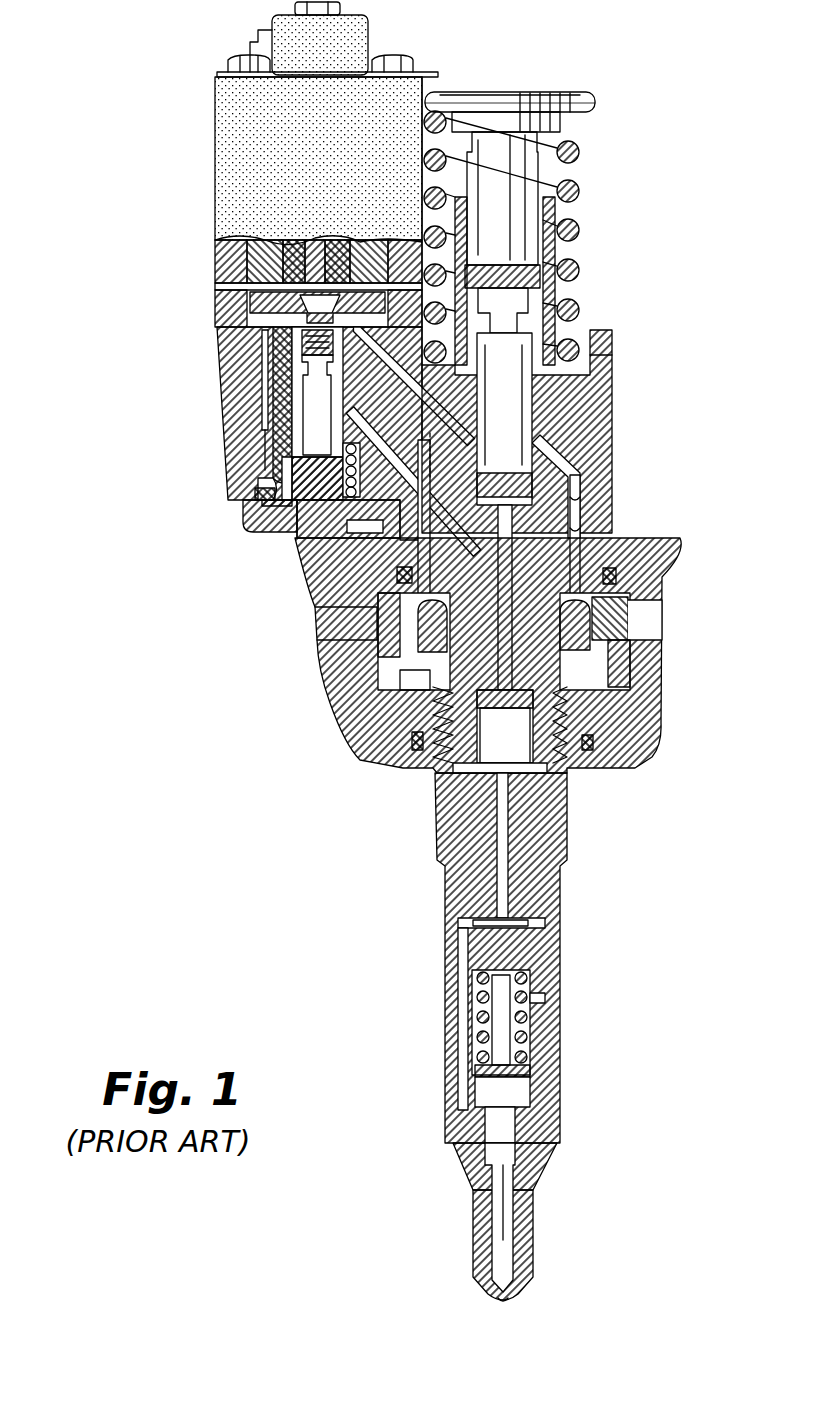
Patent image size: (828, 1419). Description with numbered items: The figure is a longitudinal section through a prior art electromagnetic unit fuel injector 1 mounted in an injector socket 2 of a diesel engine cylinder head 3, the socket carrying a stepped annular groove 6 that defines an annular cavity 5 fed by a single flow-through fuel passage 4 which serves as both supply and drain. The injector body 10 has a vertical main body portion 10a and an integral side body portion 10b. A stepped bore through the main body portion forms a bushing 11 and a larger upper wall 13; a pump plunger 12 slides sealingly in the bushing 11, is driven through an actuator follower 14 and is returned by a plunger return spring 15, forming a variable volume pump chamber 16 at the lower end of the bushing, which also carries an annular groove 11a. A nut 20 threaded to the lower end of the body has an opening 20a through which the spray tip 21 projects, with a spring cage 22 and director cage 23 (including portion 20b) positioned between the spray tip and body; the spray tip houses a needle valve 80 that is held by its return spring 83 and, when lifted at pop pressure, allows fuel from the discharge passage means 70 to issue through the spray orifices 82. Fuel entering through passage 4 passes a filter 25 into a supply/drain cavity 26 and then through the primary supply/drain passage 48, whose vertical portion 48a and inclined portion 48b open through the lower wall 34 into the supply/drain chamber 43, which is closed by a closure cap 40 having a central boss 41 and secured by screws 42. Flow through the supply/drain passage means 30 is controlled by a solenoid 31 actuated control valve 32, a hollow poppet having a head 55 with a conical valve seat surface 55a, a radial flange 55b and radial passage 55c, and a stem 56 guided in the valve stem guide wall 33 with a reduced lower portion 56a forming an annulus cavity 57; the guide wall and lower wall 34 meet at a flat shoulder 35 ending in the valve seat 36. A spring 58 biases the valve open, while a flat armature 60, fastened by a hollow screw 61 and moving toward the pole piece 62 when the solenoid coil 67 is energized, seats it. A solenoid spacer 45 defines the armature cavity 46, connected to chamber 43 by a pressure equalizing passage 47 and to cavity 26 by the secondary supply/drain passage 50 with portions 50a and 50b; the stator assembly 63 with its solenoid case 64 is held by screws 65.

The electromagnetic unit fuel injector 1 is at (628, 312).
The injector socket 2 is at (505, 742).
The cylinder head 3 is at (664, 727).
The fuel passage 4 is at (378, 642).
The annular cavity 5 is at (404, 692).
The stepped annular groove 6 is at (412, 686).
The injector body 10 is at (614, 385).
The main body portion 10a is at (596, 455).
The side body portion 10b is at (258, 420).
The bushing 11 is at (570, 708).
The annular groove 11a is at (522, 430).
The pump plunger 12 is at (536, 396).
The upper wall 13 is at (545, 277).
The tappet 14 is at (595, 100).
The plunger return spring 15 is at (580, 237).
The pump chamber 16 is at (500, 770).
The nut 20 is at (568, 975).
The opening 20a is at (560, 1150).
The nozzle body 20b is at (548, 1130).
The spray tip 21 is at (537, 1245).
The spring cage 22 is at (550, 1065).
The director cage 23 is at (550, 900).
The filter 25 is at (632, 662).
The supply/drain cavity 26 is at (655, 604).
The supply/drain passage means 30 is at (442, 484).
The solenoid 31 is at (212, 151).
The control valve 32 is at (240, 392).
The valve stem guide wall 33 is at (340, 375).
The lower wall 34 is at (250, 534).
The flat shoulder 35 is at (262, 525).
The valve seat 36 is at (285, 492).
The closure cap 40 is at (340, 565).
The central upstanding boss 41 is at (362, 486).
The screws 42 is at (300, 542).
The supply/drain chamber 43 is at (296, 520).
The solenoid spacer 45 is at (215, 300).
The armature cavity 46 is at (215, 330).
The pressure equalizing passage 47 is at (266, 432).
The primary supply/drain passage 48 is at (395, 662).
The vertical passage portion 48a is at (400, 675).
The inclined passage portion 48b is at (440, 462).
The secondary supply/drain passage 50 is at (580, 492).
The first passage portion 50a is at (582, 518).
The inclined second passage portion 50b is at (420, 393).
The head 55 is at (322, 556).
The conical valve seat surface 55a is at (398, 440).
The radial flange 55b is at (395, 570).
The radial passage 55c is at (300, 548).
The stem 56 is at (272, 375).
The lower portion 56a is at (258, 462).
The annulus cavity 57 is at (258, 492).
The spring 58 is at (262, 522).
The armature 60 is at (215, 266).
The hollow screw 61 is at (365, 292).
The pole piece 62 is at (300, 250).
The stator assembly 63 is at (212, 190).
The solenoid case 64 is at (216, 246).
The screws 65 is at (248, 62).
The solenoid coil 67 is at (338, 250).
The discharge passage means 70 is at (462, 973).
The needle valve 80 is at (508, 1195).
The spray orifices 82 is at (490, 1345).
The return spring 83 is at (528, 1018).